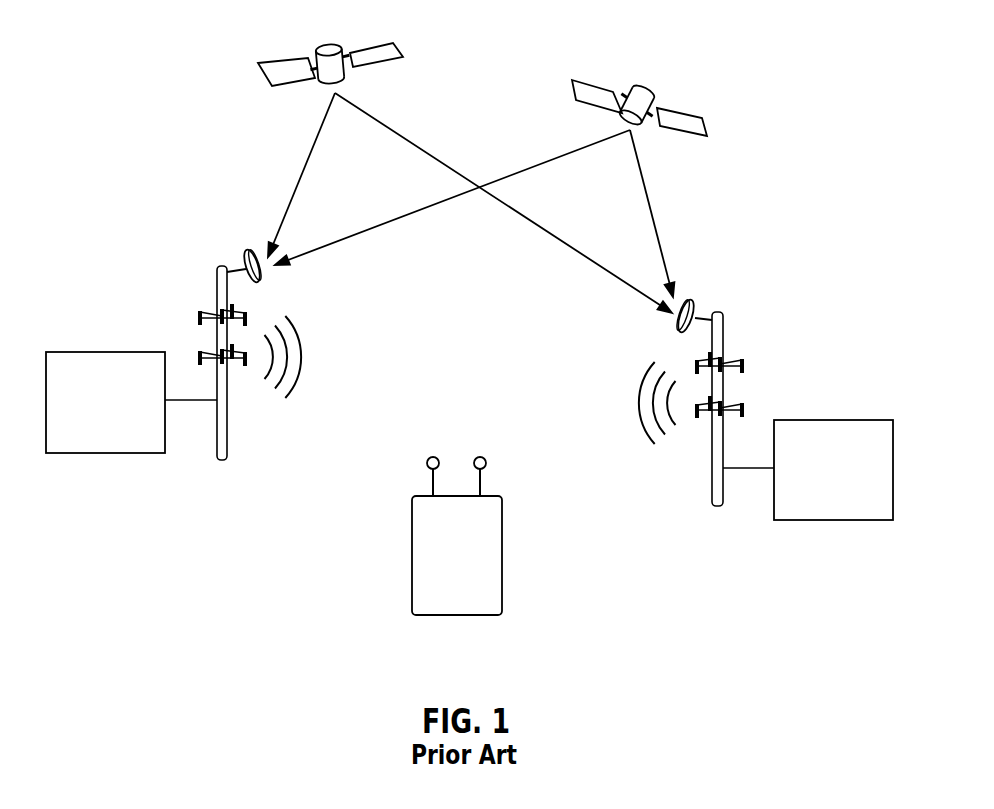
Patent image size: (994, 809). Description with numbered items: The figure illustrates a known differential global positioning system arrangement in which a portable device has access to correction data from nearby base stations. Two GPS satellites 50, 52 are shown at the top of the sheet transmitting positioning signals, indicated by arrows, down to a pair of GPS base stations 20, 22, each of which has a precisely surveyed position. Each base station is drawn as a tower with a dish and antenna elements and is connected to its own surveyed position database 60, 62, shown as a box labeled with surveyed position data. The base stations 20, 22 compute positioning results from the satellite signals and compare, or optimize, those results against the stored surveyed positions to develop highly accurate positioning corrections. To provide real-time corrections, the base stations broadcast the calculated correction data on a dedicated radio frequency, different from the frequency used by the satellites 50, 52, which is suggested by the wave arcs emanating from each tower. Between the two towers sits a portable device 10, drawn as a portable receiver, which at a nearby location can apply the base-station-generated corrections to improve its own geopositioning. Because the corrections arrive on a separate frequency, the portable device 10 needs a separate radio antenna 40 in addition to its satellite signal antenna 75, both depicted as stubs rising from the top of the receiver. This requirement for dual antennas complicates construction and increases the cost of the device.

The portable device 10 is at (502, 594).
The base station 20 is at (718, 508).
The base station 22 is at (222, 460).
The radio antenna 40 is at (481, 457).
The satellite 50 is at (340, 47).
The satellite 52 is at (647, 90).
The surveyed position database 60 is at (862, 420).
The surveyed position database 62 is at (130, 351).
The satellite signal antenna 75 is at (431, 457).